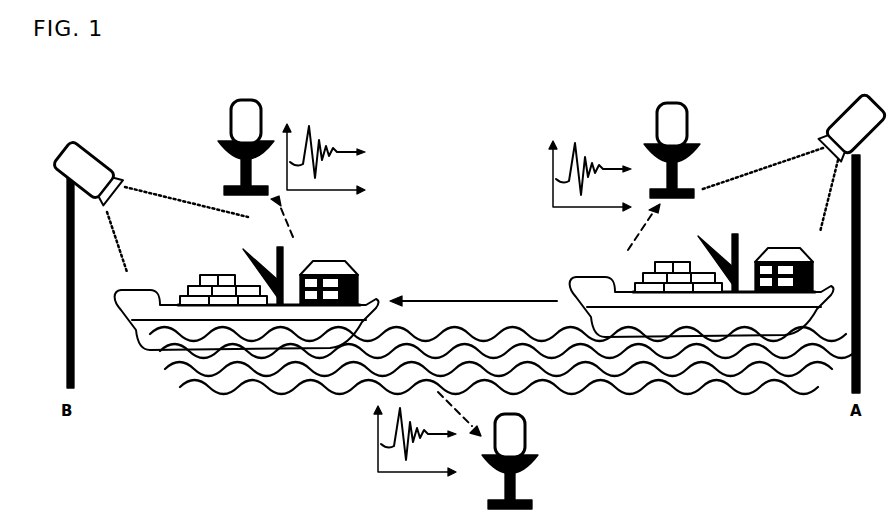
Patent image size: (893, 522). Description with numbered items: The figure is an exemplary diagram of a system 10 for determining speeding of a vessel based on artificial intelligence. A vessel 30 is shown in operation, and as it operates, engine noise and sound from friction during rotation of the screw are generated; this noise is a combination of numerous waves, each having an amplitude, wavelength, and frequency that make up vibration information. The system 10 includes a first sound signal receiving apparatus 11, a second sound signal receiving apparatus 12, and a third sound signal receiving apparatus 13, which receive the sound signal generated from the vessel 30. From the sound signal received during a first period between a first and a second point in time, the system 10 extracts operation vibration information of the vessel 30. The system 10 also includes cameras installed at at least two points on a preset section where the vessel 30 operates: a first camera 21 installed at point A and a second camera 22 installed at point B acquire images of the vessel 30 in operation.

The system for determining speeding of a vessel 10 is at (506, 105).
The first sound signal receiving apparatus 11 is at (686, 115).
The second sound signal receiving apparatus 12 is at (260, 112).
The third sound signal receiving apparatus 13 is at (523, 427).
The first camera 21 is at (845, 105).
The second camera 22 is at (96, 150).
The vessel 30 is at (325, 259).